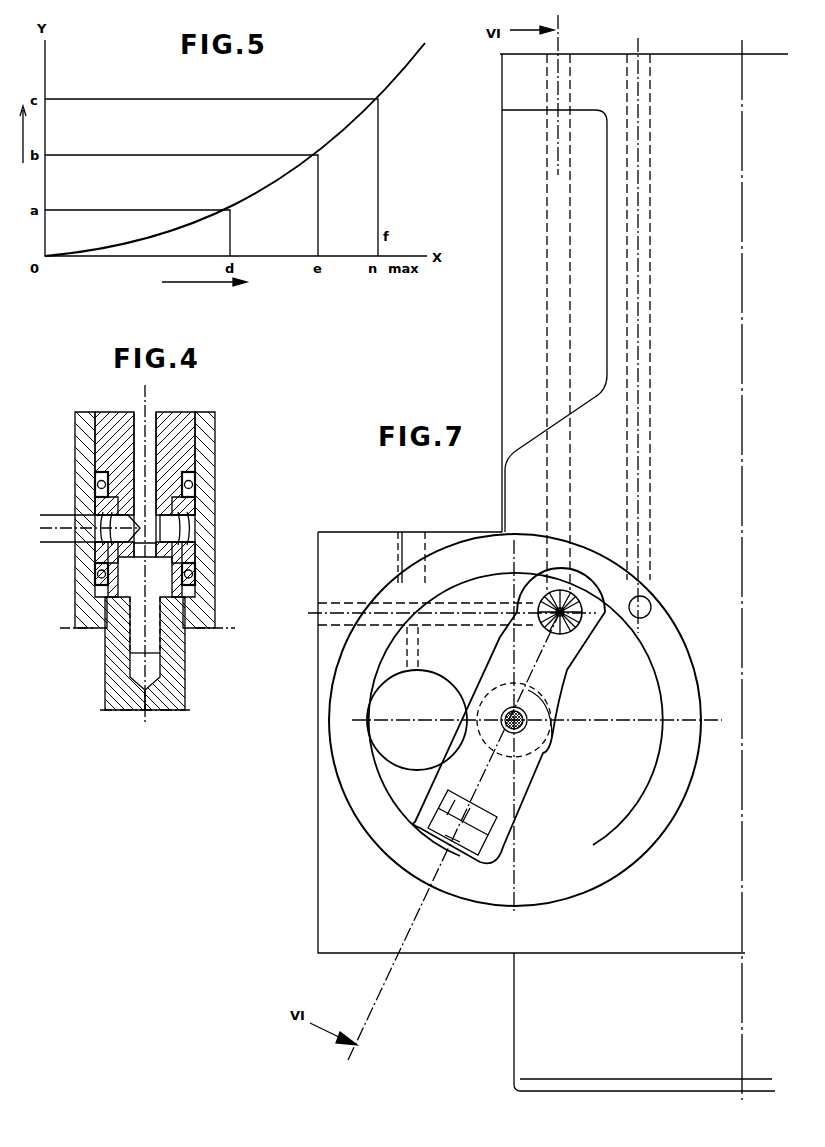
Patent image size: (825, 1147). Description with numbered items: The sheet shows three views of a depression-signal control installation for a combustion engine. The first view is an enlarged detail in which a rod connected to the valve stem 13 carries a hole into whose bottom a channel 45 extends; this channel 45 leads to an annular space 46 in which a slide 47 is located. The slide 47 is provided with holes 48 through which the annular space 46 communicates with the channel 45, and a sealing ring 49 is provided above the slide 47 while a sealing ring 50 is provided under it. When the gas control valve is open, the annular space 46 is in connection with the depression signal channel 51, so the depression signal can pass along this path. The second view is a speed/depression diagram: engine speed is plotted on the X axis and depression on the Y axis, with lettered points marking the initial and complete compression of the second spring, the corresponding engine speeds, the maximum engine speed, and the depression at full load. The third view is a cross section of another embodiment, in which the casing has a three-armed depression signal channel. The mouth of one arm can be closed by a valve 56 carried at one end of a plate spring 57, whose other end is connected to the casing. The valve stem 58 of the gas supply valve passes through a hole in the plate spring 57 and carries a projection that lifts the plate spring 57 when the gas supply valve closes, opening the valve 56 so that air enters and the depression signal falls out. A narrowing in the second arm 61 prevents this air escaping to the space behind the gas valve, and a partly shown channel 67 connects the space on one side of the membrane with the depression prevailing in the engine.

In FIG. 4, the valve stem 13 is at (173, 668).
In FIG. 4, the channel 45 is at (148, 440).
In FIG. 4, the annular space 46 is at (192, 519).
In FIG. 4, the slide 47 is at (195, 498).
In FIG. 4, the holes 48 is at (182, 535).
In FIG. 4, the sealing ring 49 is at (95, 486).
In FIG. 4, the sealing ring 50 is at (95, 573).
In FIG. 4, the depression signal channel 51 is at (45, 520).
In FIG. 7, the valve 56 is at (543, 586).
In FIG. 7, the plate spring 57 is at (577, 672).
In FIG. 7, the valve stem 58 is at (523, 730).
In FIG. 7, the second arm 61 is at (553, 345).
In FIG. 7, the channel 67 is at (640, 392).